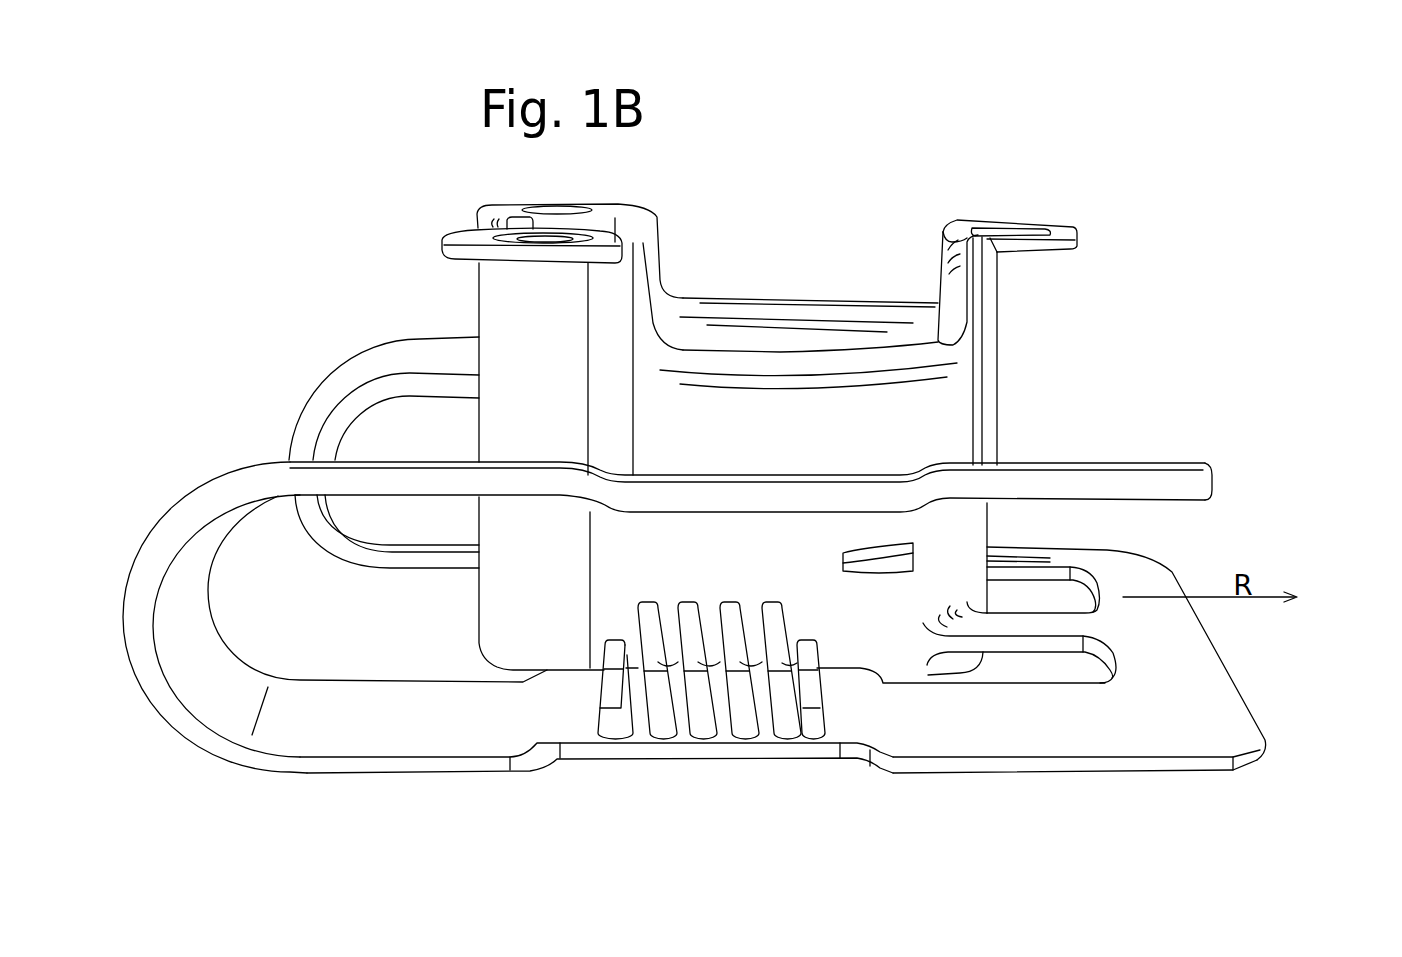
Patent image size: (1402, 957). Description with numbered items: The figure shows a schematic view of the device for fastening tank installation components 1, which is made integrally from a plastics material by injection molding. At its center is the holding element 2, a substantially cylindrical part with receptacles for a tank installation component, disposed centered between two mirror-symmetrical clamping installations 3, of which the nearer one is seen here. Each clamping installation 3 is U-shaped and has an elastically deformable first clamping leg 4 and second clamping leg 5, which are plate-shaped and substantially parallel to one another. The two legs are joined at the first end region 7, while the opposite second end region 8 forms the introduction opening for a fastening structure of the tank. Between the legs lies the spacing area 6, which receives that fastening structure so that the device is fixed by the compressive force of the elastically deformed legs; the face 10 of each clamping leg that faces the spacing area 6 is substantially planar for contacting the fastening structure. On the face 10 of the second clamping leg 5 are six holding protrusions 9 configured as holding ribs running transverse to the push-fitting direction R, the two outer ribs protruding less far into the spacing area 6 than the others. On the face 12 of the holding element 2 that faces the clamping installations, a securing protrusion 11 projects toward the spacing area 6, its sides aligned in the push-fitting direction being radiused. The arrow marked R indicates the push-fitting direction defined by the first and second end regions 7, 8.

The device for fastening tank installation components 1 is at (825, 184).
The holding element 2 is at (990, 338).
The clamping installation 3 is at (408, 328).
The first clamping leg 4 is at (427, 387).
The second clamping leg 5 is at (428, 558).
The spacing area 6 is at (1012, 430).
The first end region of the clamping installation 7 is at (137, 680).
The second end region of the clamping installation 8 is at (1213, 483).
The holding protrusion 9 is at (710, 723).
The face of a clamping leg that faces the spacing area 10 is at (360, 727).
The securing protrusion 11 is at (850, 608).
The face of the holding element that faces the spacing area 12 is at (883, 567).